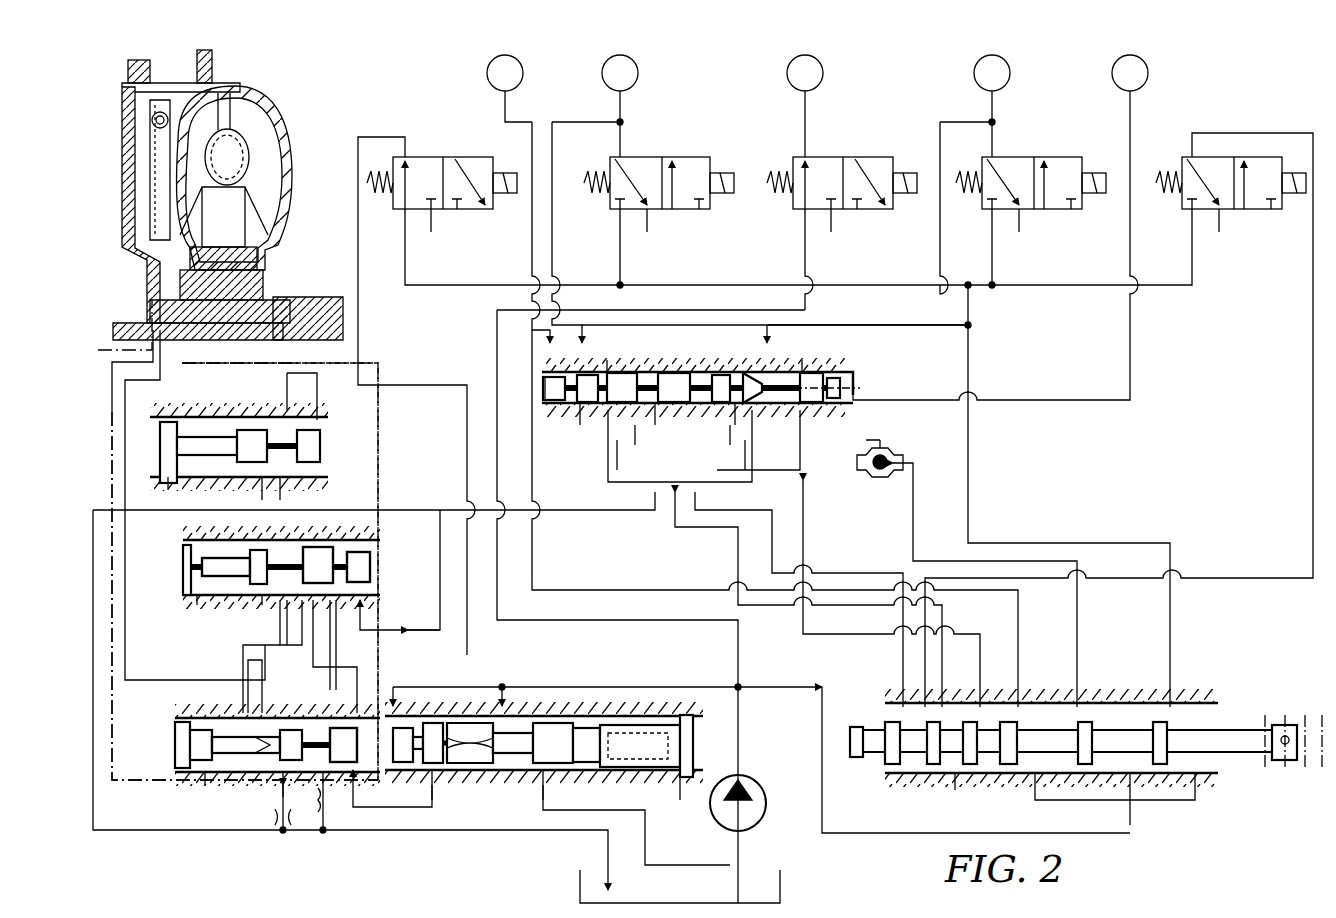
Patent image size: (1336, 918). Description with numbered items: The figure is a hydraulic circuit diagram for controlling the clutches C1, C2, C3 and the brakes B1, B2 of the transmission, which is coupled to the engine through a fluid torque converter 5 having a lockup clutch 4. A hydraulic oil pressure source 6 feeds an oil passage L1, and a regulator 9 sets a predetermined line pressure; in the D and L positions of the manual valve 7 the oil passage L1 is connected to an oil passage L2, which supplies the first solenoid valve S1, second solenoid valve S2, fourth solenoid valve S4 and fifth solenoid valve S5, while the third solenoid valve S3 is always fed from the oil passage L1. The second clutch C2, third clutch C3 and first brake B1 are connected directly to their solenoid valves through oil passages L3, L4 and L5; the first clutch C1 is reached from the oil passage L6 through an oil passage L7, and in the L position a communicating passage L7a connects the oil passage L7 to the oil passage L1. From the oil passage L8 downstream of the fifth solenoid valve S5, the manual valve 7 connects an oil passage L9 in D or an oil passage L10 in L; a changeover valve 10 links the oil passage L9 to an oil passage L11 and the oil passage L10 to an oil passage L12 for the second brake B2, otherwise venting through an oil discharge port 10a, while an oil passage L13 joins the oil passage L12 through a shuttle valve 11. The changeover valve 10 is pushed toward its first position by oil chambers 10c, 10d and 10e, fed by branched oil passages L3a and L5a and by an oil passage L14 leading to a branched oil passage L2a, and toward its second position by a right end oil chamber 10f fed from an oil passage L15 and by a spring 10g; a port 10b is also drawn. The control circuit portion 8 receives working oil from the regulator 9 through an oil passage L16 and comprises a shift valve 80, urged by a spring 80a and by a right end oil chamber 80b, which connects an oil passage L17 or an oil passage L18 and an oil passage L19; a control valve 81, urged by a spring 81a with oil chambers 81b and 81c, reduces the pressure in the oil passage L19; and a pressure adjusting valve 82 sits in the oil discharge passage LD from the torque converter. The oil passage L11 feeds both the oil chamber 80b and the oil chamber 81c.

The lockup clutch 4 is at (150, 196).
The fluid torque converter 5 is at (280, 112).
The hydraulic oil pressure source 6 is at (762, 788).
The manual valve 7 is at (1115, 718).
The control circuit portion 8 is at (108, 397).
The regulator 9 is at (520, 755).
The changeover valve 10 is at (675, 365).
The oil discharge port 10a is at (740, 420).
The port of shift valve 10b is at (632, 445).
The oil chamber 10c is at (542, 375).
The oil chamber 10d is at (582, 410).
The oil chamber 10e is at (607, 372).
The right end oil chamber 10f is at (798, 372).
The spring 10g is at (862, 388).
The shuttle valve 11 is at (864, 447).
The shift valve 80 is at (343, 785).
The spring 80a is at (232, 760).
The right end oil chamber 80b is at (362, 720).
The control valve 81 is at (227, 594).
The spring 81a is at (202, 563).
The oil chamber 81b is at (330, 532).
The oil chamber 81c is at (368, 558).
The pressure adjusting valve 82 is at (240, 435).
The first clutch C1 is at (509, 88).
The second clutch C2 is at (620, 106).
The third clutch C3 is at (805, 106).
The first brake B1 is at (992, 106).
The second brake B2 is at (1130, 197).
The first solenoid valve S1 is at (477, 210).
The second solenoid valve S2 is at (699, 210).
The third solenoid valve S3 is at (877, 210).
The fourth solenoid valve S4 is at (1071, 210).
The fifth solenoid valve S5 is at (1271, 210).
The oil passage L1 is at (660, 300).
The oil passage L2 is at (968, 515).
The branched oil passage L2a is at (873, 328).
The oil passage L3 is at (632, 128).
The branched oil passage L3a is at (552, 243).
The oil passage L4 is at (806, 129).
The oil passage L5 is at (994, 130).
The branched oil passage L5a is at (853, 326).
The oil passage L6 is at (391, 382).
The oil passage L7 is at (592, 590).
The communicating passage L7a is at (1163, 804).
The oil passage L8 is at (1313, 467).
The oil passage L9 is at (732, 574).
The oil passage L10 is at (783, 527).
The oil passage L11 is at (462, 508).
The oil passage L12 is at (1051, 397).
The oil passage L13 is at (920, 495).
The oil passage L14 is at (608, 460).
The oil passage L15 is at (803, 544).
The oil passage L16 is at (430, 807).
The oil passage L17 is at (138, 675).
The oil passage L18 is at (318, 418).
The oil passage L19 is at (240, 662).
The oil discharge passage LD is at (122, 835).